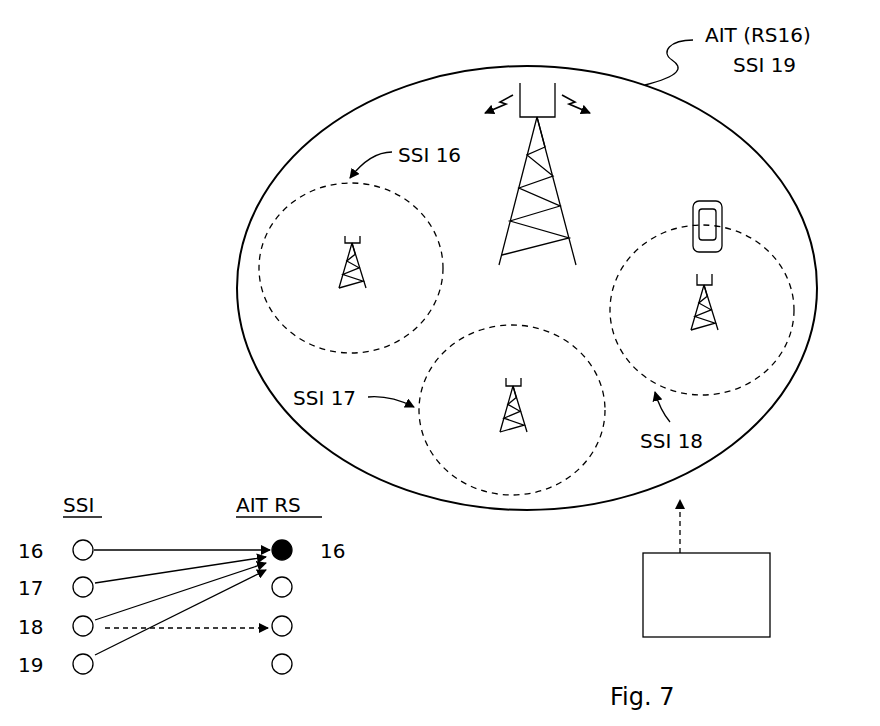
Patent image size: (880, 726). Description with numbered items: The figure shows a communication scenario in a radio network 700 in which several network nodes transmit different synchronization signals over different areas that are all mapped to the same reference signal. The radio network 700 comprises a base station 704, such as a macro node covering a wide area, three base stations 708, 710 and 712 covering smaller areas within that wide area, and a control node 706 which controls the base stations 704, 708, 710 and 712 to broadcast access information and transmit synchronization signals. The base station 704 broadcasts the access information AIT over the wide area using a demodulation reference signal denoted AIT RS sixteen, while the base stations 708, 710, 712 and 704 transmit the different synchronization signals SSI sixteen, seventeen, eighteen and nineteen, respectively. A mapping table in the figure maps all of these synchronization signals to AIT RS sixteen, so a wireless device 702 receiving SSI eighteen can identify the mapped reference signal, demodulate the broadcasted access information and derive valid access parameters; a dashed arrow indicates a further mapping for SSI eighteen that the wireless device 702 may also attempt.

The radio network 700 is at (220, 146).
The wireless device 702 is at (722, 220).
The base station 704 is at (563, 207).
The control node 706 is at (643, 593).
The base station 708 is at (341, 260).
The base station 710 is at (503, 402).
The base station 712 is at (693, 299).